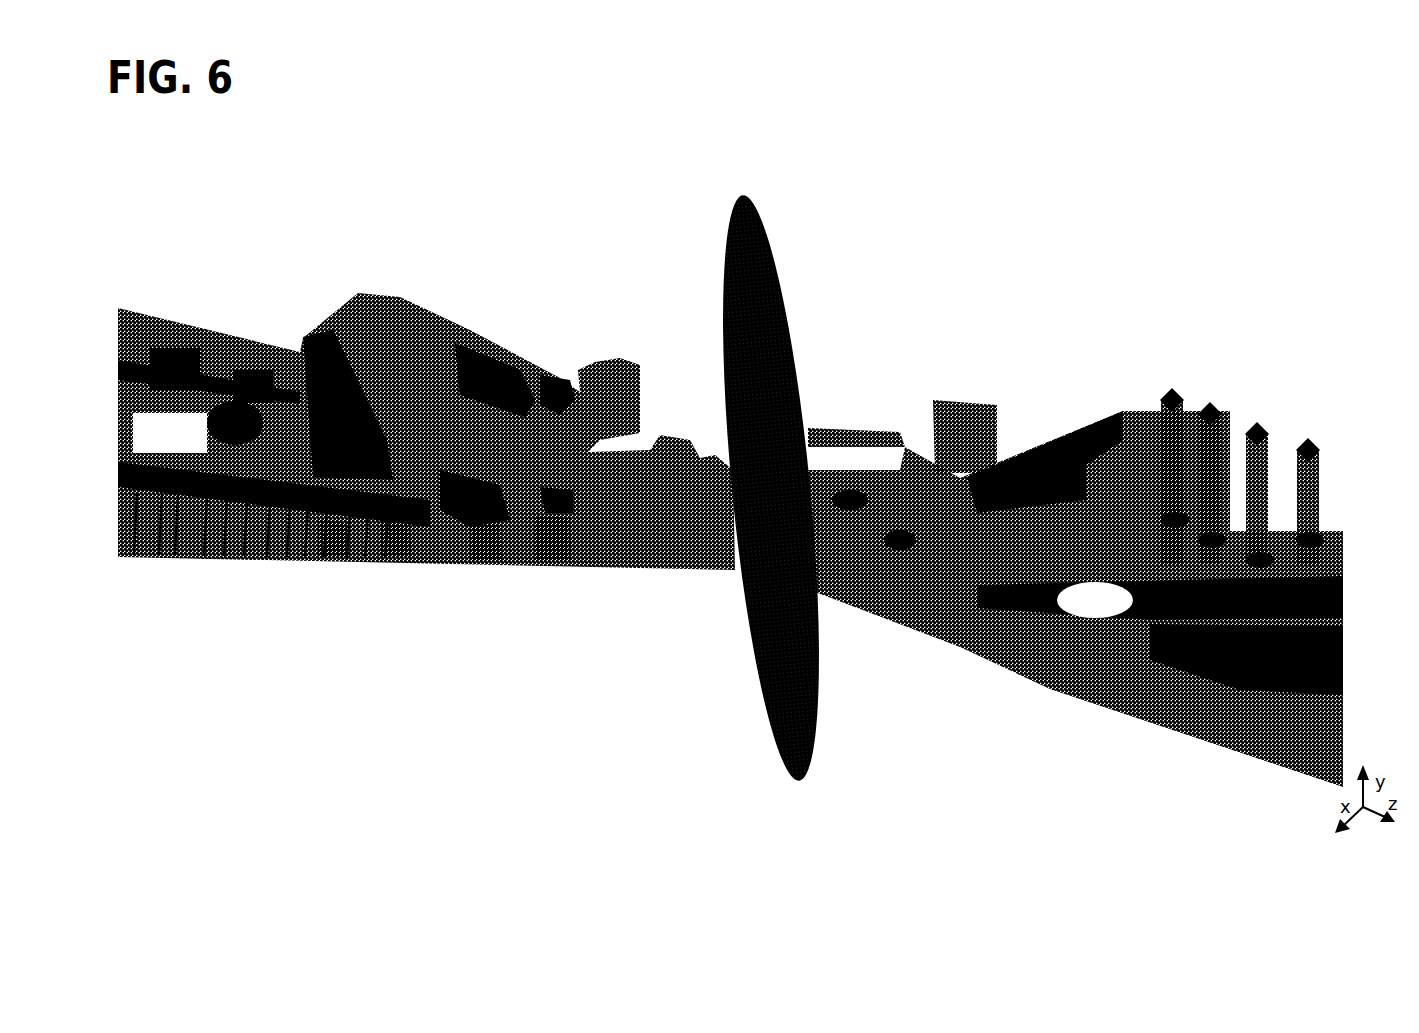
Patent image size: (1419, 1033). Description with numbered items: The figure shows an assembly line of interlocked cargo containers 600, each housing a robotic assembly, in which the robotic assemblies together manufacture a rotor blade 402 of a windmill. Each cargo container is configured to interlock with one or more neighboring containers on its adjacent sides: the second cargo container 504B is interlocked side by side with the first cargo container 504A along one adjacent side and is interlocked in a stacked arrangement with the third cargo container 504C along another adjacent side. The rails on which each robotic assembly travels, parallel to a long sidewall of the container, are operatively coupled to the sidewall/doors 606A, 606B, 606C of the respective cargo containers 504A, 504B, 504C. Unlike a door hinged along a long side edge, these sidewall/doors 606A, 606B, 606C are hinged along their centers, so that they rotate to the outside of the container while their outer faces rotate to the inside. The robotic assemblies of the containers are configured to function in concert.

The assembly line of interlocked cargo containers 600 is at (258, 178).
The rotor blade 402 is at (804, 716).
The first cargo container 504A is at (332, 560).
The second cargo container 504B is at (485, 558).
The third cargo container 504C is at (550, 382).
The sidewall/door 606A is at (392, 532).
The sidewall/door 606B is at (550, 545).
The sidewall/door 606C is at (515, 362).